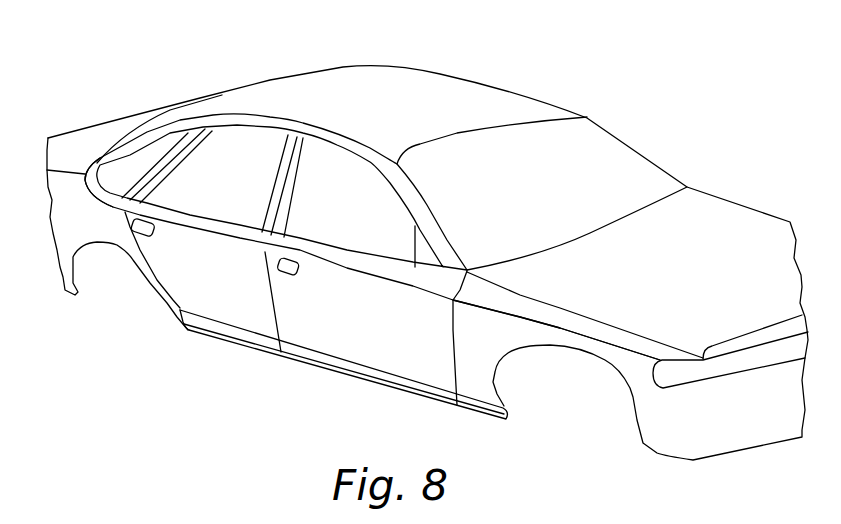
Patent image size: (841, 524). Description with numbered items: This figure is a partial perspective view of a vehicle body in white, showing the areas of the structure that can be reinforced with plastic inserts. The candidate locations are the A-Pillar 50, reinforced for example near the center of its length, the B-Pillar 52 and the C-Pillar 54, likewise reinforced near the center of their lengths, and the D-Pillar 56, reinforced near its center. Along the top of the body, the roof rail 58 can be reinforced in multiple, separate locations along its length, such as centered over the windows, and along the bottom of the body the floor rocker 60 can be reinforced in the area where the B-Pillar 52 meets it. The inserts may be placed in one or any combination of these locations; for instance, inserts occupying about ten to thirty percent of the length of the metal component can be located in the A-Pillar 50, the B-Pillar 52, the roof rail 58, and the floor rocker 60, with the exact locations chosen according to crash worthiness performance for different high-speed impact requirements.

The A-Pillar 50 is at (420, 209).
The B-Pillar 52 is at (290, 183).
The C-Pillar 54 is at (163, 165).
The D-Pillar 56 is at (101, 165).
The roof rail 58 is at (258, 120).
The floor rocker 60 is at (350, 378).